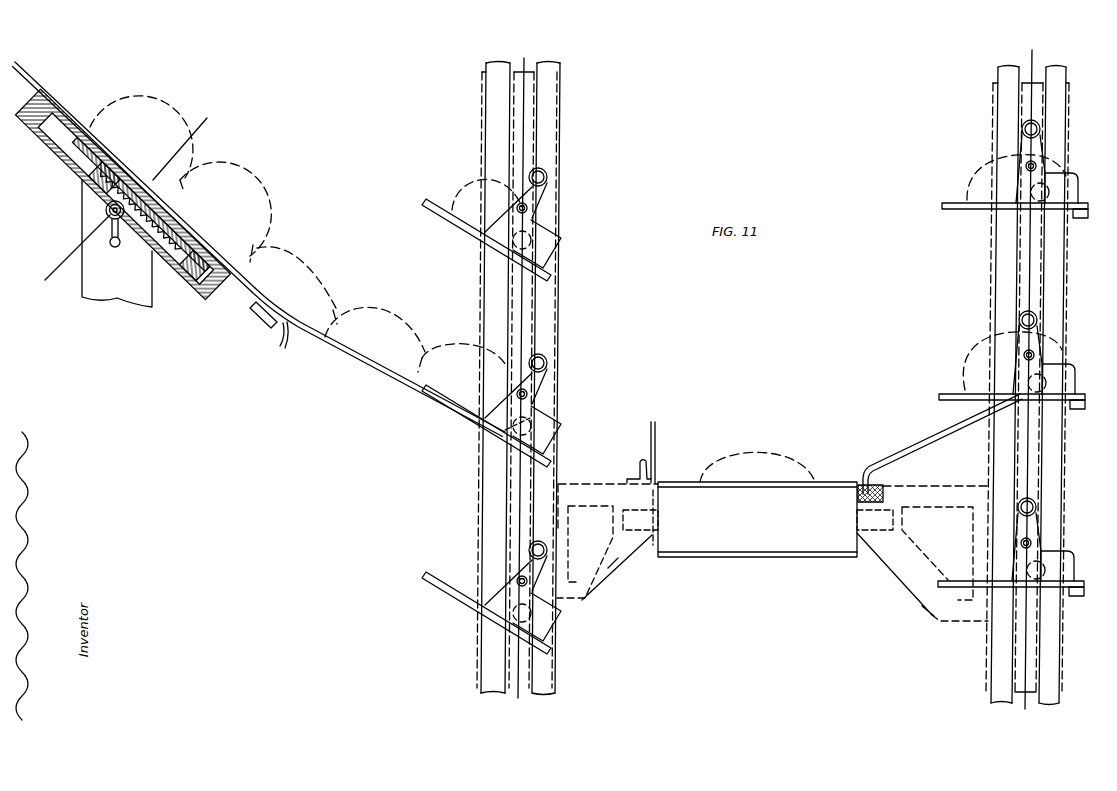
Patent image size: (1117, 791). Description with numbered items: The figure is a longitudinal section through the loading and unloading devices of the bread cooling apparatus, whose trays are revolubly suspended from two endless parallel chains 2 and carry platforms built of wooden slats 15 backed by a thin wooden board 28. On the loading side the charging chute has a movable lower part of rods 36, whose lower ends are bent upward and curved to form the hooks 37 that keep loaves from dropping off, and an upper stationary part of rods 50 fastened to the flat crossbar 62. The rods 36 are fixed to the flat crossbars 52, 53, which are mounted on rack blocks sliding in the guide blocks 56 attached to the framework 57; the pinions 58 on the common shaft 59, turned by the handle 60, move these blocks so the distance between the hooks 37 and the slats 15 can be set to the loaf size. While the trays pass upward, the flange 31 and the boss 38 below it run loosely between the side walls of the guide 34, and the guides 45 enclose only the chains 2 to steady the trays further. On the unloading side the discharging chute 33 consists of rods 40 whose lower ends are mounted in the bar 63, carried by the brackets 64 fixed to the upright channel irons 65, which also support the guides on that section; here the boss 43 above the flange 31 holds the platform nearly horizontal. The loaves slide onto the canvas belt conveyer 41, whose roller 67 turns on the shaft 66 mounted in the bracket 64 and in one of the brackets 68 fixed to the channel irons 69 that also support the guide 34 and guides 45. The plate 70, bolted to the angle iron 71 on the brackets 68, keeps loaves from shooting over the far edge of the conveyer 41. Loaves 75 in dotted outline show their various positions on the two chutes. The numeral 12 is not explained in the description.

The endless parallel chains 2 is at (775, 380).
The shaft 12 is at (207, 118).
The wooden slats 15 is at (438, 215).
The thin wooden board 28 is at (558, 249).
The flange-like protuberance 31 is at (516, 212).
The discharging chute 33 is at (945, 446).
The guide for loading 34 is at (557, 67).
The rods 36 is at (367, 368).
The hooks 37 is at (517, 413).
The boss 38 is at (520, 243).
The rods 40 is at (941, 434).
The conveyer 41 is at (701, 481).
The boss 43 is at (1041, 129).
The guides 45 is at (1059, 72).
The rods 50 is at (38, 82).
The flat crossbar 52 is at (196, 246).
The flat crossbar 53 is at (113, 177).
The guide blocks 56 is at (44, 125).
The framework 57 is at (82, 295).
The pinions 58 is at (106, 209).
The common shaft 59 is at (108, 213).
The handle 60 is at (113, 246).
The flat crossbar 62 is at (268, 316).
The bar 63 is at (882, 486).
The brackets 64 is at (892, 574).
The upright channel irons 65 is at (1070, 96).
The shaft 66 is at (880, 533).
The roller 67 is at (653, 553).
The brackets 68 is at (604, 553).
The channel irons 69 is at (560, 94).
The plate 70 is at (650, 434).
The angle iron 71 is at (641, 476).
The loaves 75 is at (137, 110).